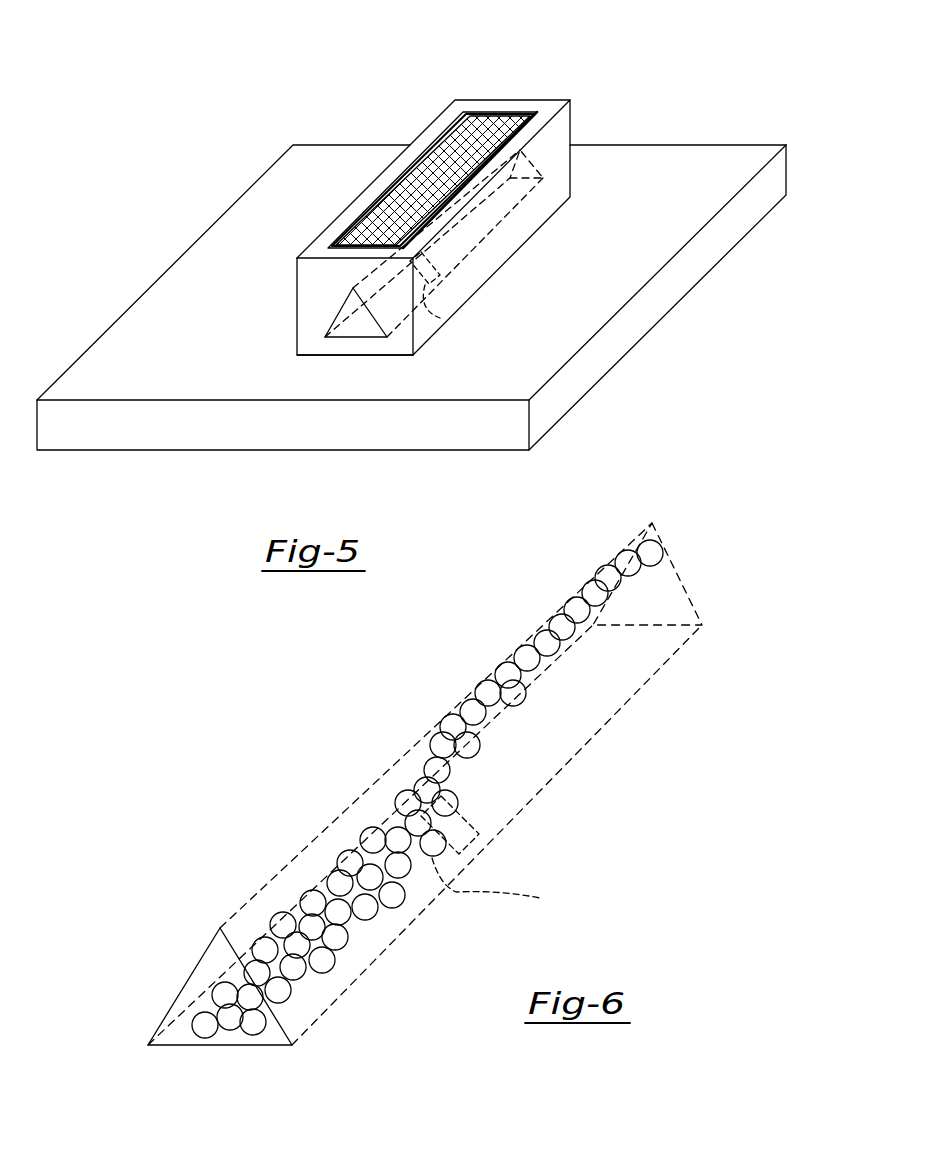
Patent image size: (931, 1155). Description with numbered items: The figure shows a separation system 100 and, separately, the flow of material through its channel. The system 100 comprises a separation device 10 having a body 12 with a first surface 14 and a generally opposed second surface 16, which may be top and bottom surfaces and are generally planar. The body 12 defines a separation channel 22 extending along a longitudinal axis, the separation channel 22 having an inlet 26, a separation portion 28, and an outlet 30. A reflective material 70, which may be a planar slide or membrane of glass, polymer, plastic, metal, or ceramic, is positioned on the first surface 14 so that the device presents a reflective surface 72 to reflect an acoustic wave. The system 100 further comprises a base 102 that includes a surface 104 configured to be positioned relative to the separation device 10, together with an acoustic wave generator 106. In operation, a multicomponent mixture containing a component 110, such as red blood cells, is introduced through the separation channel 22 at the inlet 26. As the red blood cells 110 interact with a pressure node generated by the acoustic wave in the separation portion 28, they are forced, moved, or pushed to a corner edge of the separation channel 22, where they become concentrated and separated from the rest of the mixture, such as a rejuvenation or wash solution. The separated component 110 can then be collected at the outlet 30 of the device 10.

In FIG. 5, the device 10 is at (400, 298).
In FIG. 5, the body 12 is at (328, 290).
In FIG. 5, the first surface 14 is at (297, 244).
In FIG. 5, the second surface 16 is at (306, 362).
In FIG. 5, the separation channel 22 is at (478, 273).
In FIG. 6, the separation channel 22 is at (452, 813).
In FIG. 5, the inlet 26 is at (354, 330).
In FIG. 6, the inlet 26 is at (174, 1038).
In FIG. 5, the separation portion 28 is at (452, 274).
In FIG. 6, the separation portion 28 is at (478, 824).
In FIG. 6, the outlet 30 is at (668, 582).
In FIG. 5, the reflective material 70 is at (490, 114).
In FIG. 5, the reflective surface 72 is at (527, 143).
In FIG. 5, the system 100 is at (596, 64).
In FIG. 5, the base 102 is at (78, 385).
In FIG. 5, the surface 104 is at (166, 268).
In FIG. 5, the acoustic wave generator 106 is at (442, 320).
In FIG. 6, the acoustic wave generator 106 is at (505, 887).
In FIG. 6, the component 110 is at (292, 970).